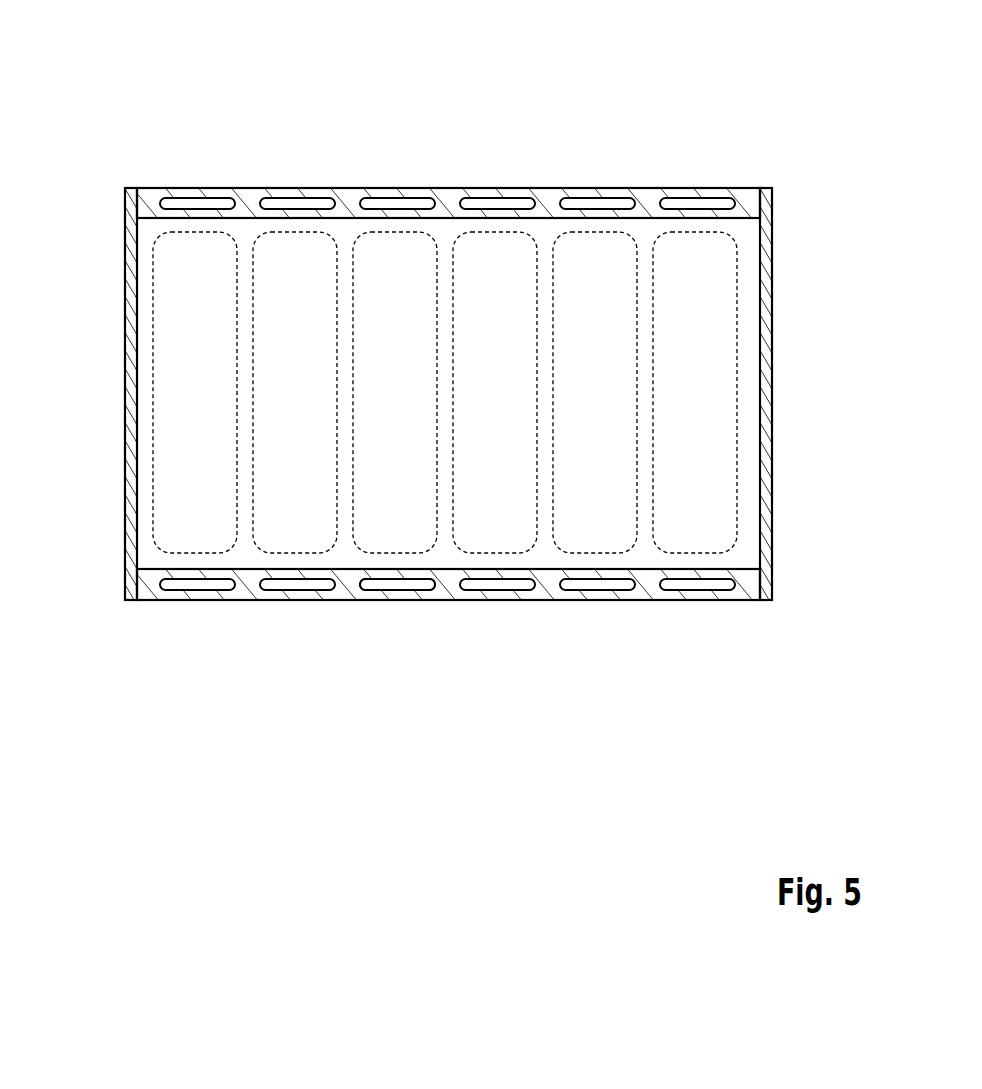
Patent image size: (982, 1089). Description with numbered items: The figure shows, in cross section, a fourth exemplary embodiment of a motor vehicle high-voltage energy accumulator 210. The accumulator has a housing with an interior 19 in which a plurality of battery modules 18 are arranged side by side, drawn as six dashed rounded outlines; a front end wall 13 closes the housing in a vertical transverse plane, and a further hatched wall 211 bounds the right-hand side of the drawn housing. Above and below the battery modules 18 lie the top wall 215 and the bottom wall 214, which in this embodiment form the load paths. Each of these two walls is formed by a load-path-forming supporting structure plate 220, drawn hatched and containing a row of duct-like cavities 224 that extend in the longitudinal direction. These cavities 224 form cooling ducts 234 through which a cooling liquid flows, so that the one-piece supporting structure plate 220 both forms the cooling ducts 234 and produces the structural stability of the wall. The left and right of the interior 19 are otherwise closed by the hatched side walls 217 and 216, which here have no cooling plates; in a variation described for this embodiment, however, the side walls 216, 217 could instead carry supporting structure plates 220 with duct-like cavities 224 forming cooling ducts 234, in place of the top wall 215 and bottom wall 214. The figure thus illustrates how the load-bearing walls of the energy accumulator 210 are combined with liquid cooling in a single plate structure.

The motor vehicle high-voltage energy accumulator 210 is at (751, 103).
The side wall 217 is at (112, 474).
The side wall 211 is at (788, 294).
The side wall 216 is at (790, 500).
The top wall 215 is at (780, 185).
The bottom wall 214 is at (778, 555).
The supporting structure plate 220 is at (545, 200).
The cooling duct 234 is at (483, 205).
The duct-like cavity 224 is at (185, 585).
The interior 19 is at (151, 566).
The front end wall 13 is at (343, 228).
The battery module 18 is at (155, 400).